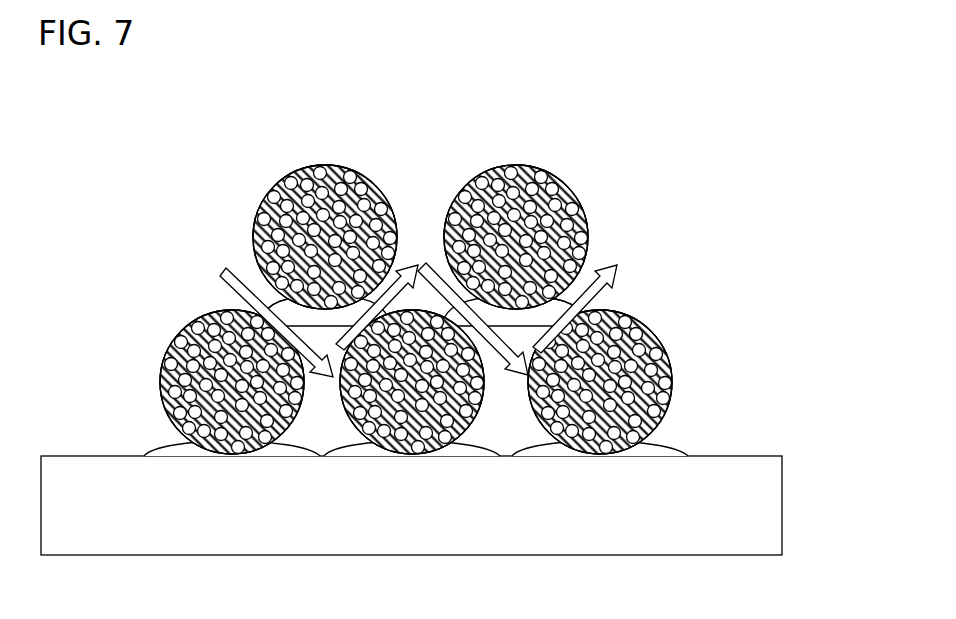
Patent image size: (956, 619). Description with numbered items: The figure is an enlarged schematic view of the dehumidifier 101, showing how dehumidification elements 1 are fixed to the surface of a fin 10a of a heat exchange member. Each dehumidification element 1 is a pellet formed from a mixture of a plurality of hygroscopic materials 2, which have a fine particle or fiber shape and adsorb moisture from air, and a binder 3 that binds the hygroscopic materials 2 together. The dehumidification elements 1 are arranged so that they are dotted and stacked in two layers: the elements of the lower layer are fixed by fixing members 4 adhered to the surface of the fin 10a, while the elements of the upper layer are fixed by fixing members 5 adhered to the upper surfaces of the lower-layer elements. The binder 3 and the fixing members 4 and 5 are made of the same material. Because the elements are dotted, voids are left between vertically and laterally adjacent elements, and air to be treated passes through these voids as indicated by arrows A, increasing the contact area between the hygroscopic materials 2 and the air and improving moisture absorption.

The dehumidification element 1 is at (267, 177).
The hygroscopic material 2 is at (585, 222).
The binder 3 is at (325, 165).
The fixing member 4 is at (155, 443).
The fixing member 5 is at (267, 290).
The fin 10a is at (765, 455).
The dehumidifier 101 is at (662, 158).
The arrow A is at (218, 278).